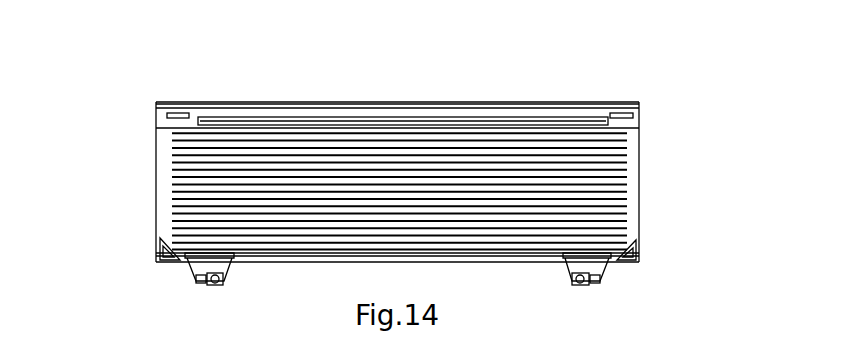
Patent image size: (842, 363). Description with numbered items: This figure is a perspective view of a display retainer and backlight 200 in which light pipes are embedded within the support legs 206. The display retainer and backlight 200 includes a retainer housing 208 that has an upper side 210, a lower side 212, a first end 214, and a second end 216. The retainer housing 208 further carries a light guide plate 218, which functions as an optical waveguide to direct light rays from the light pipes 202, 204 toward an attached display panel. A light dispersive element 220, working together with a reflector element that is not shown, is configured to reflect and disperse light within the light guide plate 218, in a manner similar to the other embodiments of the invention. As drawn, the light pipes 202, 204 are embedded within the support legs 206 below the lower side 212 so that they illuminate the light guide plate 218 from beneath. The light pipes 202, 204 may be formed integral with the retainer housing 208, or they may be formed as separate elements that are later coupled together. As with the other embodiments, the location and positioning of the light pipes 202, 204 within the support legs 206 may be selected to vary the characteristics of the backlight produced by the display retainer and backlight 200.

The display retainer and backlight 200 is at (398, 189).
The light pipe 202 is at (210, 285).
The light pipe 204 is at (575, 285).
The support legs 206 is at (200, 268).
The retainer housing 208 is at (650, 268).
The upper side 210 is at (275, 85).
The lower side 212 is at (258, 278).
The first end 214 is at (146, 218).
The second end 216 is at (645, 226).
The light guide plate 218 is at (632, 150).
The light dispersive element 220 is at (600, 193).